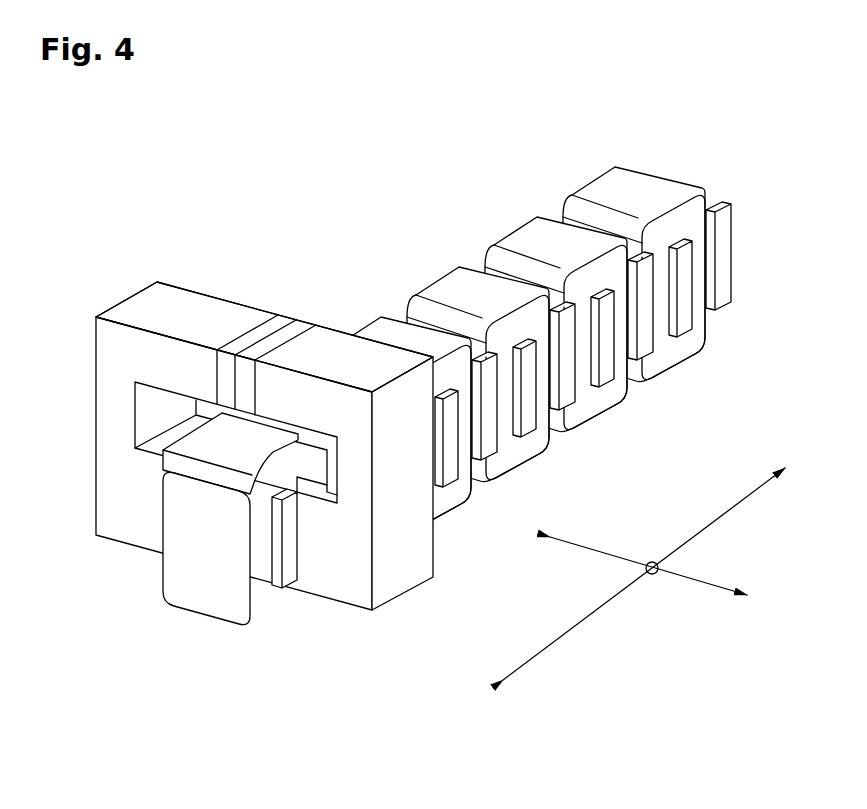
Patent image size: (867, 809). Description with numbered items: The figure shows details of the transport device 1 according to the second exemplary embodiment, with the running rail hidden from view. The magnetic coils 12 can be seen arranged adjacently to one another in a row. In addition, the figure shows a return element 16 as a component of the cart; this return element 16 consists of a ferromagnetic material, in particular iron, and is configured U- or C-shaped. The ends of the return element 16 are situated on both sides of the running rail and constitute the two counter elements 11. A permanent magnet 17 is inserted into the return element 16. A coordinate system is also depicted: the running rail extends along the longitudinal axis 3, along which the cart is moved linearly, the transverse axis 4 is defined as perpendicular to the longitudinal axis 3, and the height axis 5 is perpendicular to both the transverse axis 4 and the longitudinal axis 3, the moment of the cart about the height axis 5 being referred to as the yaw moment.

The transport device 1 is at (90, 675).
The longitudinal axis 3 is at (723, 515).
The transverse axis 4 is at (703, 584).
The height axis 5 is at (652, 562).
The counter elements 11 is at (264, 450).
The magnetic coils 12 is at (563, 185).
The return element 16 is at (180, 303).
The permanent magnet 17 is at (278, 320).